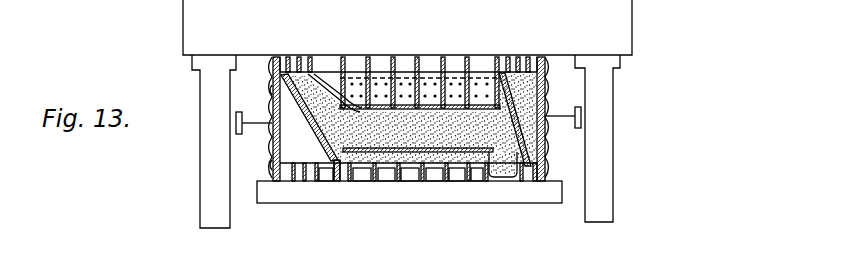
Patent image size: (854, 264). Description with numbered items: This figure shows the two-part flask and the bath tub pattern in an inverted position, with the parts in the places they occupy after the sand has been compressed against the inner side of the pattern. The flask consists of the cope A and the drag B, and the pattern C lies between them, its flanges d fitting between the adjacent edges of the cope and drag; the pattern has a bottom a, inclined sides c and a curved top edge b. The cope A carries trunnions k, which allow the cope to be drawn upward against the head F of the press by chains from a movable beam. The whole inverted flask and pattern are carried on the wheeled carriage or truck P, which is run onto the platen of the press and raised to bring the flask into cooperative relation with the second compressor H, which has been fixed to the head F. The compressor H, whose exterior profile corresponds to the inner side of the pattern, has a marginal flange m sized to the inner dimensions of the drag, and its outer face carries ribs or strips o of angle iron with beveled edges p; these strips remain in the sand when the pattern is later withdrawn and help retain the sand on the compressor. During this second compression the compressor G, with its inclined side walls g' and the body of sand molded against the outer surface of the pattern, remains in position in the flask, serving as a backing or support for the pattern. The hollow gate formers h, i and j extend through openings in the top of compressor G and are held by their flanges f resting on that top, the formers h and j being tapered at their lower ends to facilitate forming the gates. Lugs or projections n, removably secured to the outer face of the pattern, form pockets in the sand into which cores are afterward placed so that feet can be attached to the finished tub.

The head of the press F is at (407, 27).
The carriage or truck P is at (285, 198).
The cope A is at (273, 138).
The drag B is at (275, 58).
The flanges of the pattern d is at (270, 90).
The side walls of the compressor g' is at (406, 162).
The trunnions k is at (258, 121).
The ribs or strips o is at (357, 110).
The beveled edges p is at (388, 107).
The second compressor H is at (407, 72).
The marginal flange m is at (482, 60).
The curved top edge b is at (528, 54).
The pattern C is at (412, 119).
The sand layer l is at (418, 138).
The hopper wall e is at (321, 127).
The inclined sides c is at (326, 120).
The compressor or rammer G is at (290, 160).
The flanges of the gate formers f is at (325, 184).
The gate former h is at (343, 185).
The bottom of the pattern a is at (403, 184).
The gate former i is at (409, 174).
The lugs or projections n is at (452, 187).
The gate former j is at (510, 185).